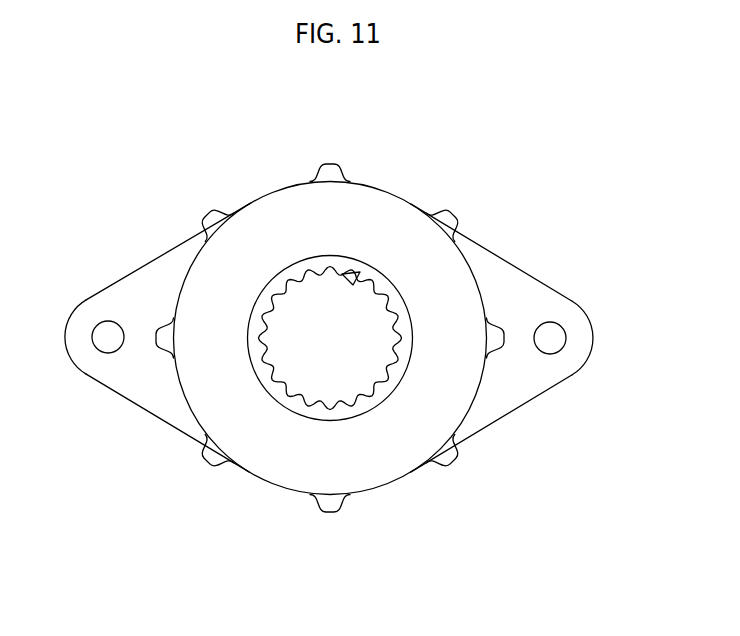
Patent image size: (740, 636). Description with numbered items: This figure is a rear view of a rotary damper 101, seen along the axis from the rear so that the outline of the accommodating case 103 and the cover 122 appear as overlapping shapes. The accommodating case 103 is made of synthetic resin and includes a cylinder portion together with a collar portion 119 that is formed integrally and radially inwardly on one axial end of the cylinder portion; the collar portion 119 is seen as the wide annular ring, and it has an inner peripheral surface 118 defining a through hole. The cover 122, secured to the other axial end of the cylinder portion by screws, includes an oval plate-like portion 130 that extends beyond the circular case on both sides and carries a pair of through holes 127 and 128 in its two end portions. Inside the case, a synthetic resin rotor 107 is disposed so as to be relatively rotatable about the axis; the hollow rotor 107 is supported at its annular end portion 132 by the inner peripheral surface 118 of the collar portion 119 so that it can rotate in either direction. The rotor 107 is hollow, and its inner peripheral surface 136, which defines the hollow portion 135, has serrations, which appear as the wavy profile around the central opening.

The rotary damper 101 is at (325, 376).
The accommodating case 103 is at (371, 181).
The rotor 107 is at (288, 278).
The inner peripheral surface 118 is at (250, 313).
The collar portion 119 is at (397, 460).
The cover 122 is at (147, 413).
The through hole 127 is at (107, 338).
The through hole 128 is at (552, 340).
The plate-like portion 130 is at (530, 303).
The annular end portion 132 is at (397, 376).
The hollow portion 135 is at (322, 365).
The inner peripheral surface 136 is at (358, 274).